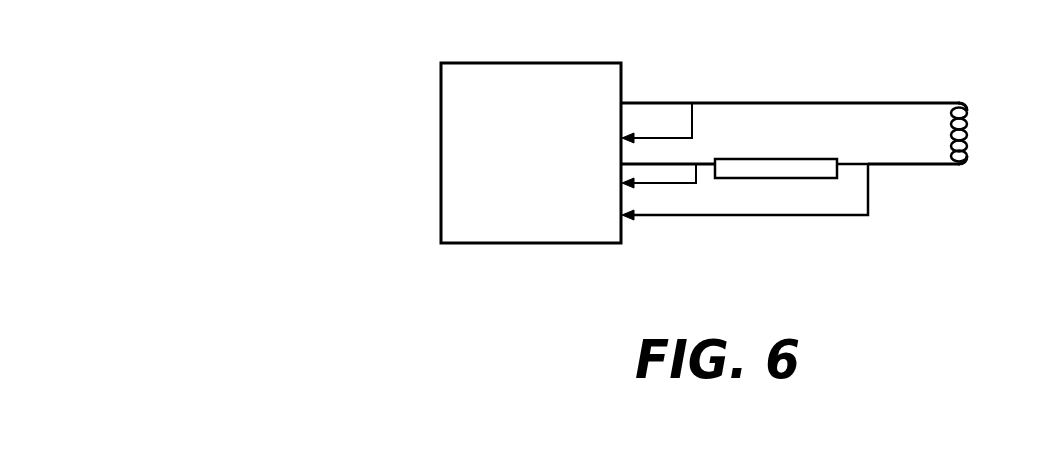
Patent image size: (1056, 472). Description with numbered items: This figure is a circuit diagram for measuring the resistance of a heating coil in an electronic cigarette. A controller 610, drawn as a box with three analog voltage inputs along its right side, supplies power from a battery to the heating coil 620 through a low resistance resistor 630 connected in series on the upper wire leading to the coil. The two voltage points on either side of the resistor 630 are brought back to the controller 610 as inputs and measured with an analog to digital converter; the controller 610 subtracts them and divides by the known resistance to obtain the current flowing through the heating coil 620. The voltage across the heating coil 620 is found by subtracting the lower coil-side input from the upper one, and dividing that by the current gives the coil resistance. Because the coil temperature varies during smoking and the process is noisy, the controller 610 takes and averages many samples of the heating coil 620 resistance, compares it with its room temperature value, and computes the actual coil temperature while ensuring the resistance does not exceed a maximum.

The controller 610 is at (512, 243).
The heating coil 620 is at (968, 132).
The low resistance resistor 630 is at (793, 178).